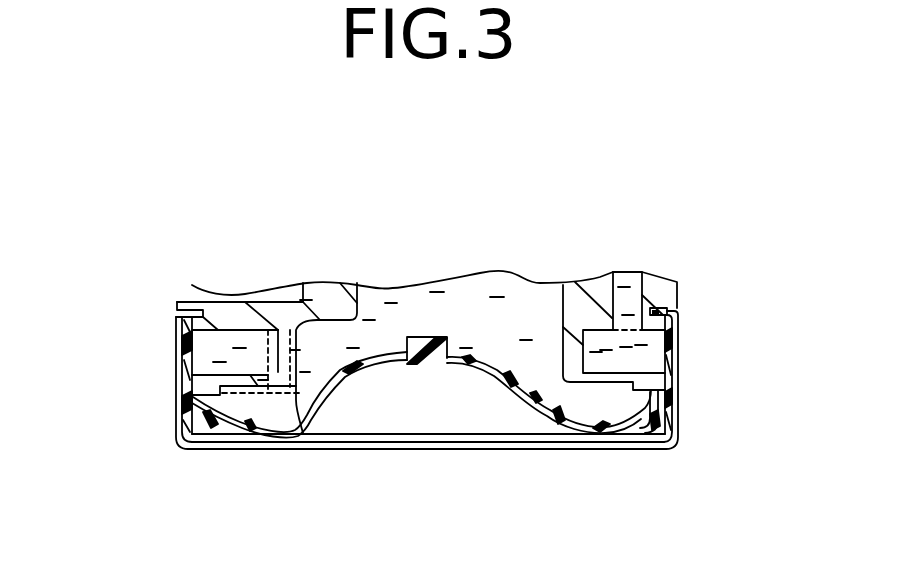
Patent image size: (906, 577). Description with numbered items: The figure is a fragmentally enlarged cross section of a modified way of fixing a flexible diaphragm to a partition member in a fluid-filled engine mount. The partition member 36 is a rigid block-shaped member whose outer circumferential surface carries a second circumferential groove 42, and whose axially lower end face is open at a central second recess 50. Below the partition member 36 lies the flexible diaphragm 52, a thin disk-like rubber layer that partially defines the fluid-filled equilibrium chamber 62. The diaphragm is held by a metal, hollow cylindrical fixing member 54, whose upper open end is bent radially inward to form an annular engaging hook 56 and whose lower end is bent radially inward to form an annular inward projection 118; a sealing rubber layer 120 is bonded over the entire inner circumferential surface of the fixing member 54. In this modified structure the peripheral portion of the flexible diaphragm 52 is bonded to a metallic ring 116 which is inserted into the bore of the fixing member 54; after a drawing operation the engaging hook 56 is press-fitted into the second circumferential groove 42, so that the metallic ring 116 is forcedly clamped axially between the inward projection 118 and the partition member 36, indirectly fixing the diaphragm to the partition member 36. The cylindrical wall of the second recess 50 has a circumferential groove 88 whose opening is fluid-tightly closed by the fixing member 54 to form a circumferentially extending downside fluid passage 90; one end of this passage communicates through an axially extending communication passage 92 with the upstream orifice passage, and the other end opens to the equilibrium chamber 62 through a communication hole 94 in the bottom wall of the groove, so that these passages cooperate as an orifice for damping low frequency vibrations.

The partition member 36 is at (668, 271).
The second circumferential groove 42 is at (187, 317).
The second recess 50 is at (562, 302).
The flexible diaphragm 52 is at (519, 380).
The fixing member 54 is at (681, 380).
The engaging hook 56 is at (661, 309).
The equilibrium chamber 62 is at (440, 323).
The circumferential groove 88 is at (590, 362).
The downside fluid passage 90 is at (628, 365).
The communication passage 92 is at (629, 288).
The communication hole 94 is at (302, 433).
The metallic ring 116 is at (193, 418).
The inward projection 118 is at (664, 450).
The sealing rubber layer 120 is at (668, 362).